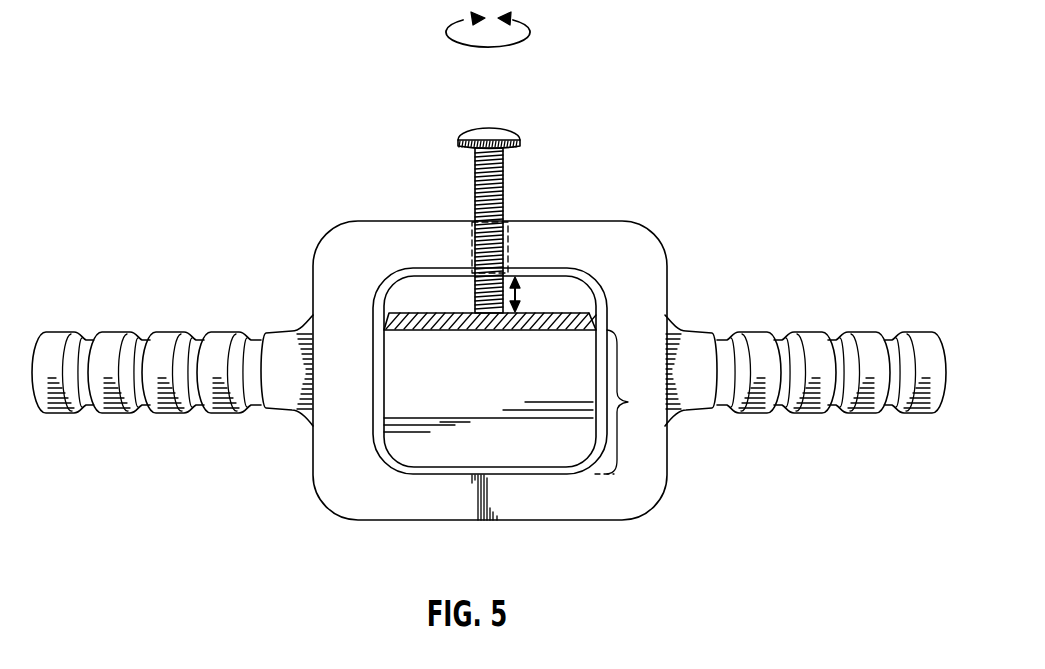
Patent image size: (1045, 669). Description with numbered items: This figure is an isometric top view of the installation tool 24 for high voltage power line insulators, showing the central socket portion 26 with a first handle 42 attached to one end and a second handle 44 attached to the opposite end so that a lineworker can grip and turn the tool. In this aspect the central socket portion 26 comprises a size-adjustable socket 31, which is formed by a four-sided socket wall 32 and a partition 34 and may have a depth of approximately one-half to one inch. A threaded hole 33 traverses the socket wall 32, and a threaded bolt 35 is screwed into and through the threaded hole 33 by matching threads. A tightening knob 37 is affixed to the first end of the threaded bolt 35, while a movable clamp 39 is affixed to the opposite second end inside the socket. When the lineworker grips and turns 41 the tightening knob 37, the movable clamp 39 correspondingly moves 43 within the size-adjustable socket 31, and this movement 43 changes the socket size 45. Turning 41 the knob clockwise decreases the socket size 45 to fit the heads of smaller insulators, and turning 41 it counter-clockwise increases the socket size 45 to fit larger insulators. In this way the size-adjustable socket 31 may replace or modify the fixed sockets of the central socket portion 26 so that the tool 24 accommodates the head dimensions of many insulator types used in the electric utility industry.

The installation tool 24 is at (191, 124).
The central socket portion 26 is at (643, 252).
The size-adjustable socket 31 is at (430, 404).
The four-sided socket wall 32 is at (392, 458).
The threaded hole 33 is at (508, 226).
The partition 34 is at (560, 443).
The threaded bolt 35 is at (478, 195).
The tightening knob 37 is at (485, 128).
The movable clamp 39 is at (565, 326).
The turning 41 is at (530, 32).
The first handle 42 is at (818, 348).
The moving 43 is at (518, 290).
The second handle 44 is at (163, 348).
The socket size 45 is at (629, 402).